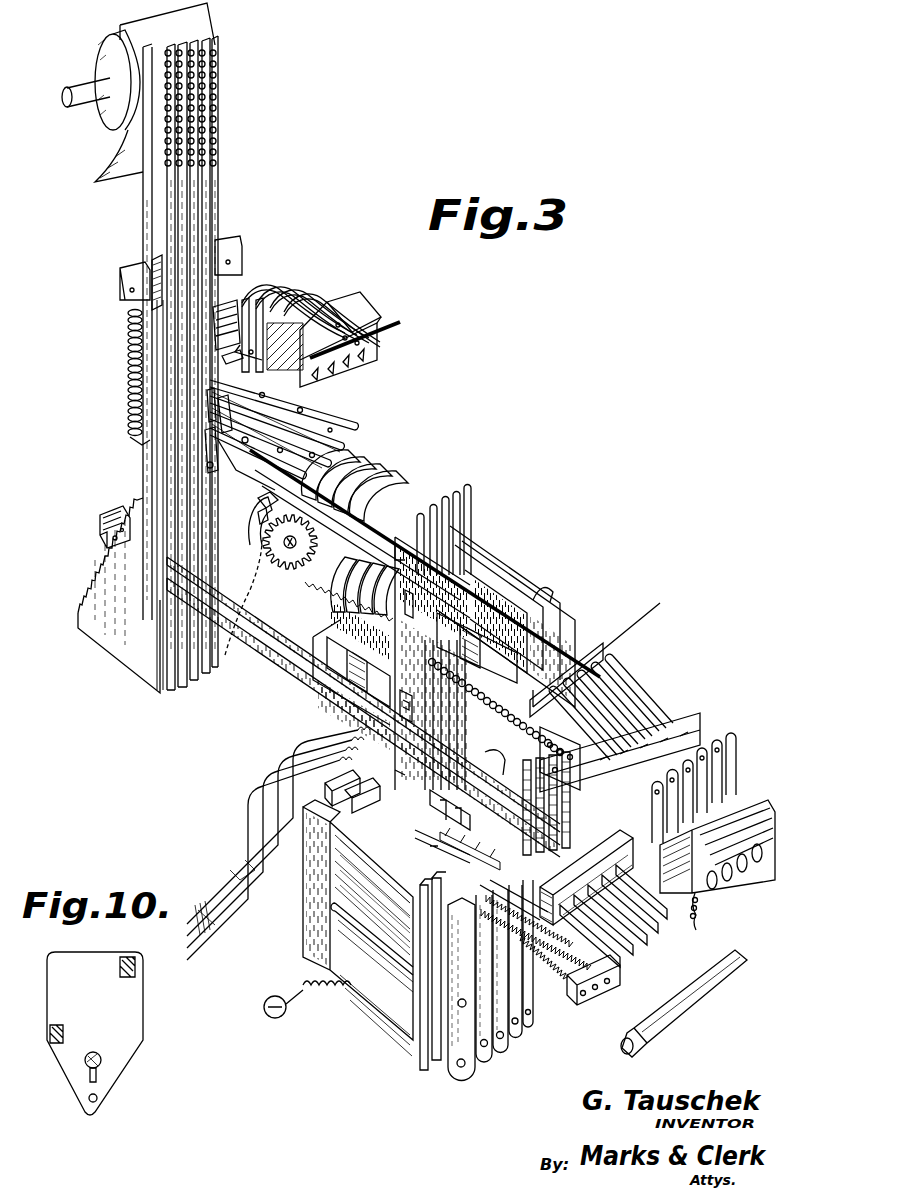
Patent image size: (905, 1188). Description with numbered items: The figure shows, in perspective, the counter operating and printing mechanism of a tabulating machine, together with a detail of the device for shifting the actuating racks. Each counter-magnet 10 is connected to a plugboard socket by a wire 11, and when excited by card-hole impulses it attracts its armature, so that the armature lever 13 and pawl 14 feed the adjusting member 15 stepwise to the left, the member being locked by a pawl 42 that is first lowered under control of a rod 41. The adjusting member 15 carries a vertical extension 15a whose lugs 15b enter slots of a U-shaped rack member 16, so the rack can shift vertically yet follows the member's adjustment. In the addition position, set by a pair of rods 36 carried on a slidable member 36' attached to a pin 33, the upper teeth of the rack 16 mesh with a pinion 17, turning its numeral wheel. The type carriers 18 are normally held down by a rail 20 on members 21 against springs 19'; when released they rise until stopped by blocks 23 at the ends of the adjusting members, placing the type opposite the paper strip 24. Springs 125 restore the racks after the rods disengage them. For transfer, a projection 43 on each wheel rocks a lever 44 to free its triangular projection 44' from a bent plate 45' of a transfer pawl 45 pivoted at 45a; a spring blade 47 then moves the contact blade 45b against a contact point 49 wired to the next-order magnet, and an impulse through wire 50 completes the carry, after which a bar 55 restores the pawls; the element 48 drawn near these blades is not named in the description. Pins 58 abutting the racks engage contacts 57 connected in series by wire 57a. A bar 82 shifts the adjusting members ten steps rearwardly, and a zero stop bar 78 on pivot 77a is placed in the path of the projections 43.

In FIG. 3, the counter-magnet 10 is at (343, 942).
In FIG. 3, the wire 11 is at (200, 908).
In FIG. 3, the armature lever 13 is at (463, 1040).
In FIG. 3, the pawl 14 is at (440, 998).
In FIG. 3, the adjusting member 15 is at (300, 683).
In FIG. 3, the vertical extension 15a is at (411, 660).
In FIG. 3, the lugs 15b is at (413, 603).
In FIG. 3, the U-shaped rack member 16 is at (287, 663).
In FIG. 3, the pinion 17 is at (298, 555).
In FIG. 3, the type carrier 18 is at (158, 217).
In FIG. 3, the spring 19' is at (102, 418).
In FIG. 3, the rail 20 is at (140, 311).
In FIG. 3, the member 21 is at (427, 813).
In FIG. 3, the block 23 is at (100, 532).
In FIG. 3, the paper strip 24 is at (115, 160).
In FIG. 10, the pin 33 is at (90, 1108).
In FIG. 3, the rod 36 is at (455, 620).
In FIG. 10, the rod 36 is at (106, 1021).
In FIG. 10, the slidable member 36' is at (95, 1033).
In FIG. 3, the rod 41 is at (575, 735).
In FIG. 3, the pawl 42 is at (487, 765).
In FIG. 3, the transfer projection 43 is at (370, 530).
In FIG. 3, the lever 44 is at (305, 435).
In FIG. 3, the triangular projection 44' is at (161, 441).
In FIG. 3, the transfer pawl 45 is at (148, 470).
In FIG. 3, the bent plate 45' is at (141, 421).
In FIG. 3, the pivot 45a is at (210, 478).
In FIG. 3, the contact blade 45b is at (225, 325).
In FIG. 3, the spring blade 47 is at (258, 303).
In FIG. 3, the spring arms 48 is at (350, 312).
In FIG. 3, the contact point 49 is at (365, 352).
In FIG. 3, the wire 50 is at (400, 323).
In FIG. 3, the bar 55 is at (230, 361).
In FIG. 3, the contacts 57 is at (727, 773).
In FIG. 3, the wire 57a is at (697, 907).
In FIG. 3, the pin 58 is at (590, 693).
In FIG. 3, the pivot 77a is at (323, 623).
In FIG. 3, the zero stop bar 78 is at (258, 504).
In FIG. 3, the bar 82 is at (690, 1010).
In FIG. 3, the spring 125 is at (533, 700).